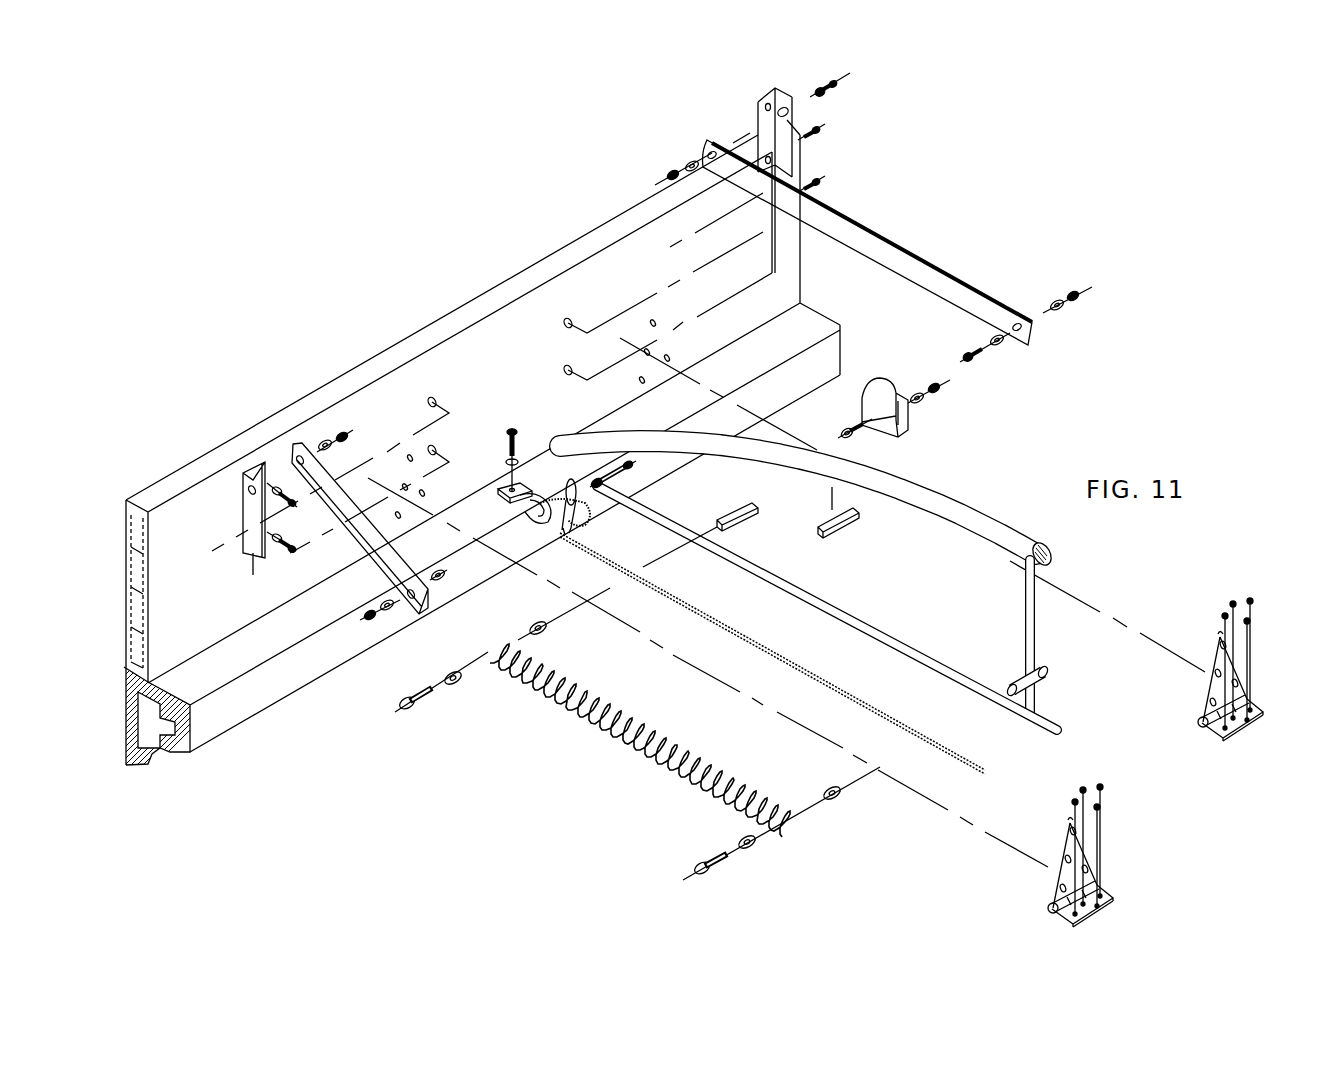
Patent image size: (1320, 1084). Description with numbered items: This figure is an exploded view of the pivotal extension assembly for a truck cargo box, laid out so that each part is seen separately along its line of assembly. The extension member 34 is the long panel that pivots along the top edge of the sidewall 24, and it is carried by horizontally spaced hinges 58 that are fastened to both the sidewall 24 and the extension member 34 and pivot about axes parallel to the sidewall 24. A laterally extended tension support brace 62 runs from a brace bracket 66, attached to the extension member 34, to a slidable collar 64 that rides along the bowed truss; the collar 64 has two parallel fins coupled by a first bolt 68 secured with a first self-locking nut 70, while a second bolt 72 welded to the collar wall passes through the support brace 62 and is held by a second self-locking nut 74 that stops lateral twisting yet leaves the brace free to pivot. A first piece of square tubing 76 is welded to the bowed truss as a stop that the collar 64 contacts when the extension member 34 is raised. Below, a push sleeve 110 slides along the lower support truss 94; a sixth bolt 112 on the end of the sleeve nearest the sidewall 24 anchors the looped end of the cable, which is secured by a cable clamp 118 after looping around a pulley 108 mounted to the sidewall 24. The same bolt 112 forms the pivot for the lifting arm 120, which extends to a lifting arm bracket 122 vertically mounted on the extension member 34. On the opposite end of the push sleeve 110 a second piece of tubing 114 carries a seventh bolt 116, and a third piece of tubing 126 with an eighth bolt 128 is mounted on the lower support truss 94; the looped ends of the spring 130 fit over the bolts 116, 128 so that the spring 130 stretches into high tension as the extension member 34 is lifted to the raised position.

The sidewall 24 is at (142, 762).
The extension member 34 is at (500, 283).
The hinge 58 is at (1048, 890).
The tension support brace 62 is at (903, 250).
The slidable collar 64 is at (910, 425).
The brace bracket 66 is at (800, 148).
The first bolt 68 is at (848, 432).
The first self-locking nut 70 is at (940, 395).
The second bolt 72 is at (980, 360).
The second self-locking nut 74 is at (1085, 300).
The first piece of elongated square tubing 76 is at (843, 526).
The lower support truss 94 is at (888, 628).
The pulley 108 is at (520, 512).
The push sleeve 110 is at (663, 513).
The sixth bolt 112 is at (633, 467).
The second piece of tubing 114 is at (753, 512).
The seventh bolt 116 is at (412, 707).
The cable clamp 118 is at (568, 532).
The lifting arm 120 is at (298, 444).
The lifting arm bracket 122 is at (238, 532).
The third piece of tubing 126 is at (1050, 678).
The eighth bolt 128 is at (695, 865).
The spring 130 is at (615, 735).